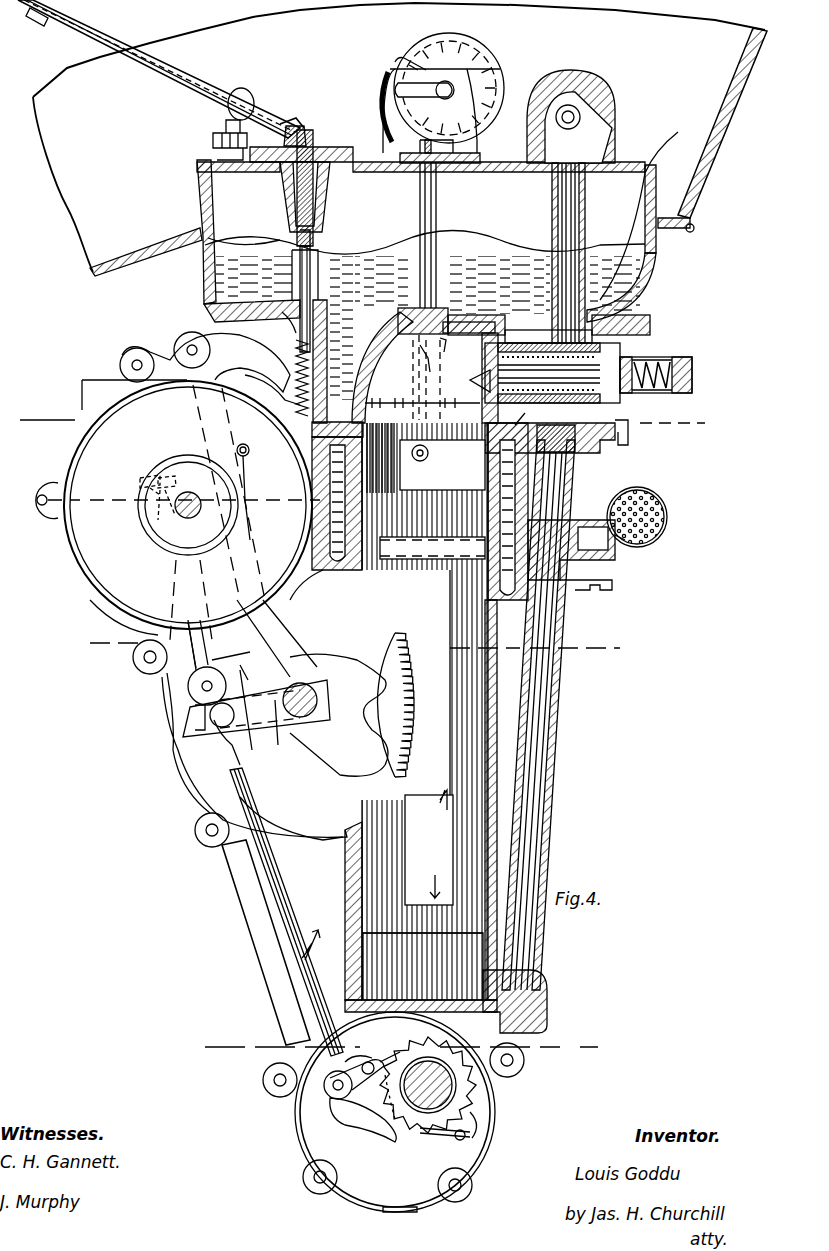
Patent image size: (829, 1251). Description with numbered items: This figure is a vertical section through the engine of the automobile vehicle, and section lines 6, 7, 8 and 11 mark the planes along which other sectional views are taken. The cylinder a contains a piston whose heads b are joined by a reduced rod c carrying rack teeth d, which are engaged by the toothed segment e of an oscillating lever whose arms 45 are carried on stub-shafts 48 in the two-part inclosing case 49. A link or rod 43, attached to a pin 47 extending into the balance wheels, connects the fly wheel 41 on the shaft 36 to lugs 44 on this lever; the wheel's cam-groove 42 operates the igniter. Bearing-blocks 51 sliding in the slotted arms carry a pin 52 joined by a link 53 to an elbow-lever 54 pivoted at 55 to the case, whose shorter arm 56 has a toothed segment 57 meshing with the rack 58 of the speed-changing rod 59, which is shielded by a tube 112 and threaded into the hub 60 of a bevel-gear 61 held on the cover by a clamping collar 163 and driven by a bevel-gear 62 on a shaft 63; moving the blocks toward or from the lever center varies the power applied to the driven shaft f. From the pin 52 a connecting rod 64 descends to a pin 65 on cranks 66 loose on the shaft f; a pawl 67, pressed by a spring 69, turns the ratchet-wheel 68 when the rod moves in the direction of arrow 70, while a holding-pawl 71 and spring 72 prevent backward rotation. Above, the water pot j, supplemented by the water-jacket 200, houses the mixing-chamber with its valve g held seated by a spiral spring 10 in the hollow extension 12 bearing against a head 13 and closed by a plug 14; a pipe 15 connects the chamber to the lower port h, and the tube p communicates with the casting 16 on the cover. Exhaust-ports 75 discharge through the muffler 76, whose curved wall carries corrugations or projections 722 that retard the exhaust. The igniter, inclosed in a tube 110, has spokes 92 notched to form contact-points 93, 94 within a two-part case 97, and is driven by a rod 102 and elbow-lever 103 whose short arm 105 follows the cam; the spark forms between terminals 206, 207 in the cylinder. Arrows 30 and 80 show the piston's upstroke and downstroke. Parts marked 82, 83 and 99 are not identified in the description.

The section line 6 is at (360, 645).
The section line 7 is at (372, 424).
The section line 8 is at (398, 1112).
The spiral spring 10 is at (645, 362).
The section line 11 is at (228, 697).
The hollow extension 12 is at (656, 395).
The head 13 is at (668, 390).
The cap or plug 14 is at (692, 370).
The pipe 15 is at (560, 736).
The pipe or hollow casting 16 is at (612, 138).
The arrow 30 is at (429, 847).
The shaft 36 is at (198, 498).
The balance or fly wheel 41 is at (85, 548).
The cam-groove 42 is at (160, 538).
The link or rod 43 is at (217, 512).
The lugs or ears 44 is at (186, 688).
The arms 45 is at (345, 735).
The pin 47 is at (150, 518).
The stub-shafts 48 is at (316, 702).
The inclosing case 49 is at (240, 940).
The bearing-blocks 51 is at (205, 718).
The shaft or pin 52 is at (214, 735).
The link 53 is at (267, 720).
The elbow-lever 54 is at (268, 568).
The pivot 55 is at (186, 346).
The shorter arm 56 is at (232, 350).
The toothed segment 57 is at (270, 352).
The toothed portion or rack 58 is at (312, 382).
The rod 59 is at (318, 250).
The threaded hub 60 is at (320, 192).
The bevel-gear 61 is at (314, 150).
The bevel-gear 62 is at (300, 130).
The shaft or rod 63 is at (24, 22).
The link or connecting rod 64 is at (275, 893).
The pin 65 is at (338, 1099).
The cranks or arms 66 is at (375, 1122).
The pawl 67 is at (386, 1060).
The ratchet-wheel 68 is at (425, 1040).
The spring 69 is at (360, 1050).
The arrow 70 is at (313, 784).
The holding-pawl 71 is at (435, 1136).
The spring 72 is at (476, 1135).
The exhaust-ports 75 is at (440, 548).
The muffler 76 is at (668, 518).
The arrow 80 is at (427, 883).
The rod 82 is at (200, 80).
The handle 83 is at (228, 118).
The radiating spokes or arms 92 is at (398, 84).
The contact-point 93 is at (440, 50).
The contact-point 94 is at (420, 60).
The two-part case 97 is at (468, 46).
The bracket 99 is at (388, 100).
The rod 102 is at (416, 400).
The elbow-lever 103 is at (412, 458).
The short arm 105 is at (252, 500).
The tube 110 is at (438, 214).
The tube 112 is at (280, 236).
The clamping ring or collar 163 is at (350, 160).
The water-jacket 200 is at (515, 500).
The terminal or point 206 is at (422, 372).
The terminal or point 207 is at (406, 368).
The corrugations or projections 722 is at (663, 535).